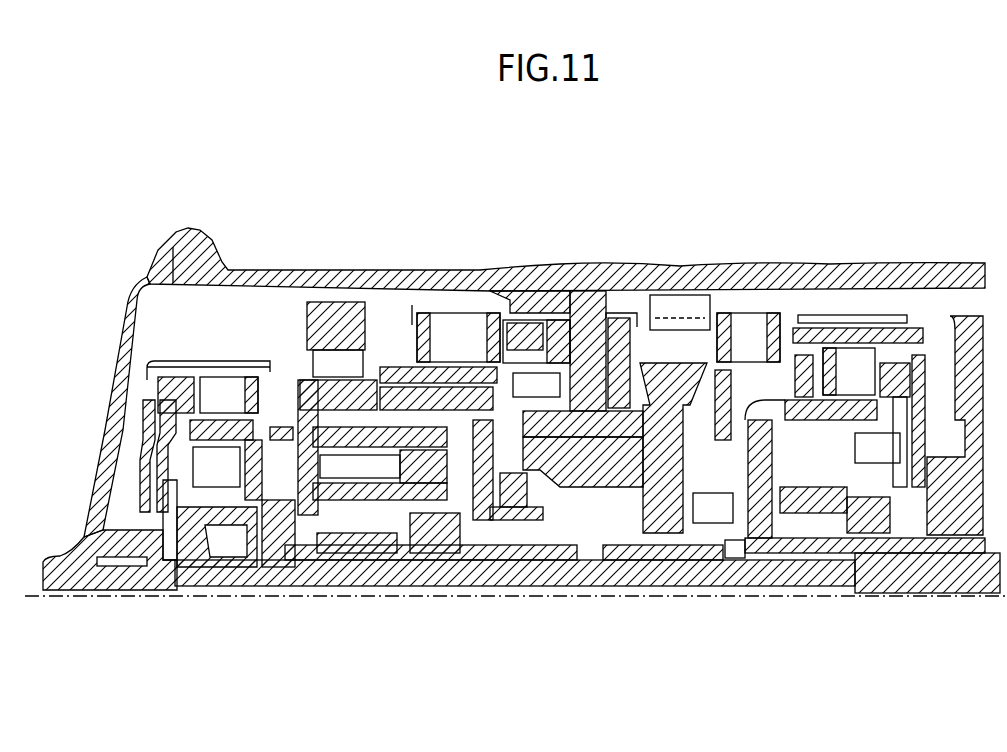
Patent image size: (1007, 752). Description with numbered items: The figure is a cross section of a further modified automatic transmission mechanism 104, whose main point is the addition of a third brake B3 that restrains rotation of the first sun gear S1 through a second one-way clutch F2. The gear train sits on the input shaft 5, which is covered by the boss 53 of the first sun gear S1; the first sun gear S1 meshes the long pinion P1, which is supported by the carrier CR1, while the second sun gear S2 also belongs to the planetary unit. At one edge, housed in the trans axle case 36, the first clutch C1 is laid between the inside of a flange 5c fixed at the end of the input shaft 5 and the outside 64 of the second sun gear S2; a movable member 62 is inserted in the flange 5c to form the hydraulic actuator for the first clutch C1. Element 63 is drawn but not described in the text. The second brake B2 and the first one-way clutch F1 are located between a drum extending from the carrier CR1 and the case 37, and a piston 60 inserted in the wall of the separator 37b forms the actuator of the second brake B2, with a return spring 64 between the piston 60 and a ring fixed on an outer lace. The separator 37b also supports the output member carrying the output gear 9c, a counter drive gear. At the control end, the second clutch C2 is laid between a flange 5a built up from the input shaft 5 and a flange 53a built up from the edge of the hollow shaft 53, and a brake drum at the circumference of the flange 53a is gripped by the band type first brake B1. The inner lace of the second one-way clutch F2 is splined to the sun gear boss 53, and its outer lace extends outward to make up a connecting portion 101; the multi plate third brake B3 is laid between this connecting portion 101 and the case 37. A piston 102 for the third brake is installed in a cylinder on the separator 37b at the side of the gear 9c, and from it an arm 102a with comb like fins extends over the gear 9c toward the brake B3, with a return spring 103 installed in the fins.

The automatic transmission mechanism 104 is at (186, 122).
The trans axle case 36 is at (125, 308).
The case 37 is at (466, 278).
The separator 37b is at (556, 262).
The piston 60 is at (520, 332).
The return spring 64 is at (276, 420).
The input shaft 5 is at (550, 578).
The flange 5a is at (770, 563).
The flange 5c is at (145, 405).
The sun gear boss 53 is at (610, 552).
The flange 53a is at (733, 549).
The movable member 62 is at (148, 427).
The bearing support 63 is at (187, 480).
The piston for third brake 102 is at (588, 342).
The arm 102a is at (713, 320).
The return spring 103 is at (677, 300).
The connecting portion 101 is at (770, 368).
The output gear 9c is at (640, 362).
The first clutch C1 is at (208, 400).
The second clutch C2 is at (852, 440).
The first brake B1 is at (880, 318).
The second brake B2 is at (456, 333).
The third brake B3 is at (747, 376).
The first one-way clutch F1 is at (398, 356).
The second one-way clutch F2 is at (713, 508).
The carrier CR1 is at (307, 513).
The long pinion P1 is at (393, 495).
The first sun gear S1 is at (443, 537).
The second sun gear S2 is at (367, 549).